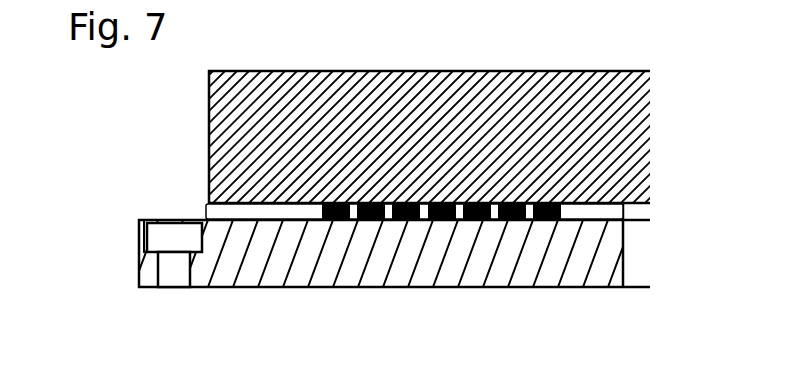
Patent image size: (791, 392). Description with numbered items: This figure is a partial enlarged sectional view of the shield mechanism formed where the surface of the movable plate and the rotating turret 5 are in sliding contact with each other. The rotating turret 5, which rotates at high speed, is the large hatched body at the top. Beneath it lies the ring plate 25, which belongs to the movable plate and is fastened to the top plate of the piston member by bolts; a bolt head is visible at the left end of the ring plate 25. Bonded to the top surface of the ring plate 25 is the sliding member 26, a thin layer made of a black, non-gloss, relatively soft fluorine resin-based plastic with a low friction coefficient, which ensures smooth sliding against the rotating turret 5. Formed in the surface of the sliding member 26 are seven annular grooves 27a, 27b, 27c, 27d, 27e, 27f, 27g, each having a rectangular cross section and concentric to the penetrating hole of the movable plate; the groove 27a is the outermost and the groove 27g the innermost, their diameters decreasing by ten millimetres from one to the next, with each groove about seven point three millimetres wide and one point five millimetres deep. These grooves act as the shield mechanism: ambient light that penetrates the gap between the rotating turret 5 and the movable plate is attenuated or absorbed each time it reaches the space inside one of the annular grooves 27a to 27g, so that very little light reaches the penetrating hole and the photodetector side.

The rotating turret 5 is at (429, 137).
The ring plate 25 is at (258, 265).
The sliding member 26 is at (240, 213).
The annular groove 27a is at (335, 221).
The annular groove 27b is at (371, 221).
The annular groove 27c is at (407, 221).
The annular groove 27d is at (442, 221).
The annular groove 27e is at (477, 221).
The annular groove 27f is at (512, 221).
The annular groove 27g is at (547, 221).